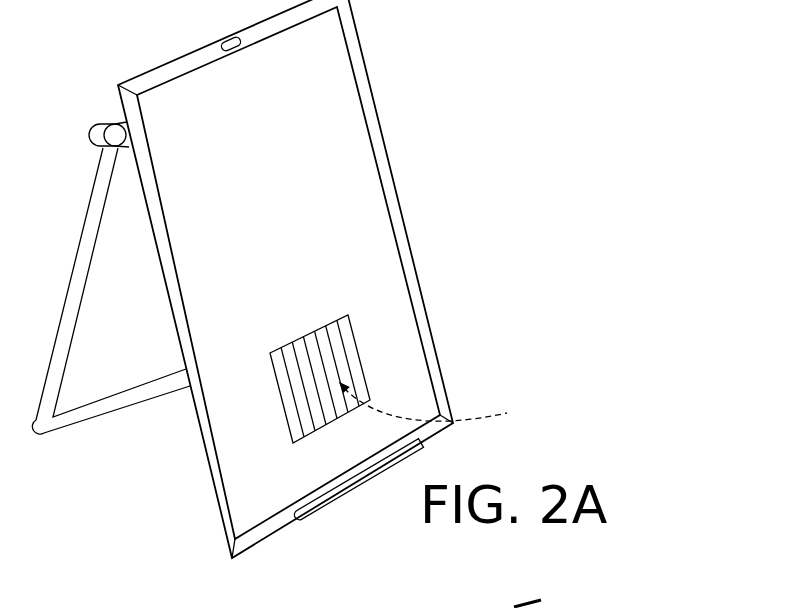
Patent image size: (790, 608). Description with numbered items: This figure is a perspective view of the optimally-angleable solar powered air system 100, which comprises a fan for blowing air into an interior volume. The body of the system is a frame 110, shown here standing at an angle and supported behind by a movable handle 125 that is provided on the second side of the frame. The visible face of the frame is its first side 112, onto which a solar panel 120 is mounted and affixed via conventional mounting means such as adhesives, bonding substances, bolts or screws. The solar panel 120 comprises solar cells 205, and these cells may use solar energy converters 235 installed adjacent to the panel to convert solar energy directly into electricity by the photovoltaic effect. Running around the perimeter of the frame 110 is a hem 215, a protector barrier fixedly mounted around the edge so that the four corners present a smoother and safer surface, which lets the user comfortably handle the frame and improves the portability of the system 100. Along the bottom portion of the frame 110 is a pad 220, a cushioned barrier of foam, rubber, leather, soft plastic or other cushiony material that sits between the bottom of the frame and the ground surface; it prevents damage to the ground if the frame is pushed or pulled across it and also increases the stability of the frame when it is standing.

The optimally-angleable solar powered air system 100 is at (614, 92).
The frame 110 is at (266, 151).
The first side 112 is at (286, 197).
The solar panel 120 is at (274, 390).
The movable handle 125 is at (83, 214).
The solar cells 205 is at (351, 341).
The hem 215 is at (399, 192).
The pad 220 is at (295, 527).
The solar energy converters 235 is at (444, 403).